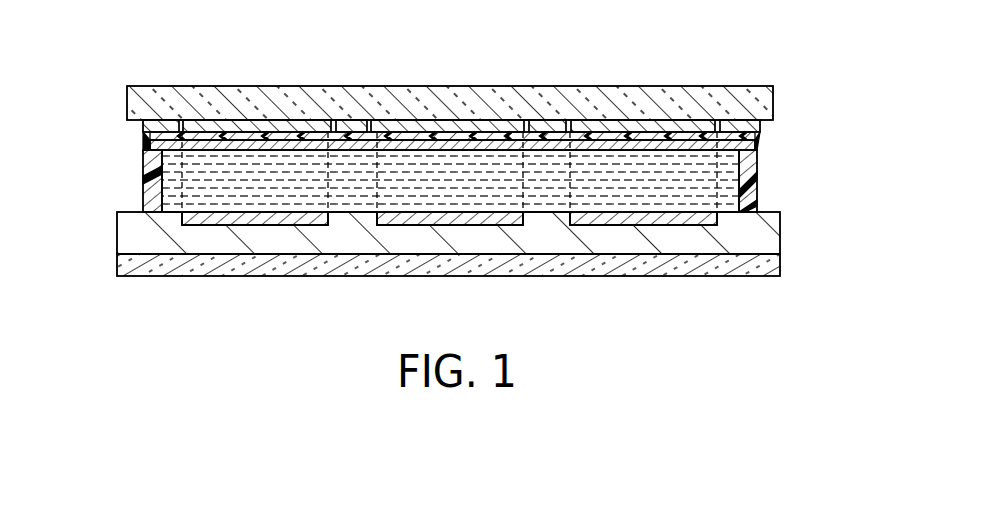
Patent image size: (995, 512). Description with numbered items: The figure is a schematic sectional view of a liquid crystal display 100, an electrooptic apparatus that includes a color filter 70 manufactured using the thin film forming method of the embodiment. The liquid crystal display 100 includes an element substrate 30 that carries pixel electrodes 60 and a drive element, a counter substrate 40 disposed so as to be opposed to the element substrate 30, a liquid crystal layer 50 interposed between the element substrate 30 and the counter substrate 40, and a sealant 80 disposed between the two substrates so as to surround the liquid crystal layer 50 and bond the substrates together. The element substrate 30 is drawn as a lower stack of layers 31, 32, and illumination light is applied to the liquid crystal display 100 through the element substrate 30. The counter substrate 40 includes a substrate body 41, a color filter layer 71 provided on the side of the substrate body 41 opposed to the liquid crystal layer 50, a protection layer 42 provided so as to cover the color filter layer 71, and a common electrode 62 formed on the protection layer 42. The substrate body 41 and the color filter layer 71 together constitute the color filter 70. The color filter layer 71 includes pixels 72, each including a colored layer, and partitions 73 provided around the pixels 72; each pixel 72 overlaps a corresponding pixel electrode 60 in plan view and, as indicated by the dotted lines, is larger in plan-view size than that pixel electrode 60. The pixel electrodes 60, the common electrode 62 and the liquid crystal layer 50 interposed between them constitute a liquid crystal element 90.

The liquid crystal display 100 is at (790, 69).
The counter substrate 40 is at (118, 101).
The color filter 70 is at (848, 80).
The substrate body 41 is at (773, 100).
The color filter layer 71 is at (760, 127).
The pixel 72 is at (257, 127).
The partition 73 is at (180, 127).
The protection layer 42 is at (762, 153).
The liquid crystal element 90 is at (72, 157).
The liquid crystal layer 50 is at (146, 193).
The common electrode 62 is at (143, 160).
The sealant 80 is at (757, 207).
The pixel electrode 60 is at (190, 225).
The element substrate 30 is at (108, 263).
The circuit layer 32 is at (778, 237).
The base substrate 31 is at (778, 268).